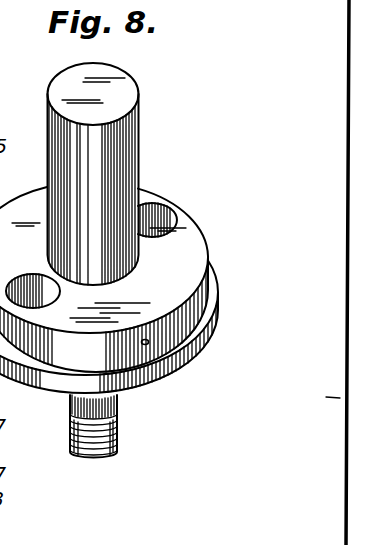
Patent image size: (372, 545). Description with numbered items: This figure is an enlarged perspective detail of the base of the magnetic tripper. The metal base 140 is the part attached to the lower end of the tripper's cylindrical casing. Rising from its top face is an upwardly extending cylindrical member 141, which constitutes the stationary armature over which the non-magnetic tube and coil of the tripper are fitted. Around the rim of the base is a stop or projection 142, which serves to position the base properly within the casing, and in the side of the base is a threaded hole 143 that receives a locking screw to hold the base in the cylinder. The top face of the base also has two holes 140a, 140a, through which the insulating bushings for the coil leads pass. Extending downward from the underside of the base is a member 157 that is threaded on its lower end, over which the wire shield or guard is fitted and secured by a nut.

The metal base 140 is at (192, 238).
The holes 140a is at (25, 277).
The cylindrical member 141 is at (128, 152).
The stop or projection 142 is at (188, 363).
The threaded hole 143 is at (147, 345).
The downwardly extending member 157 is at (118, 429).